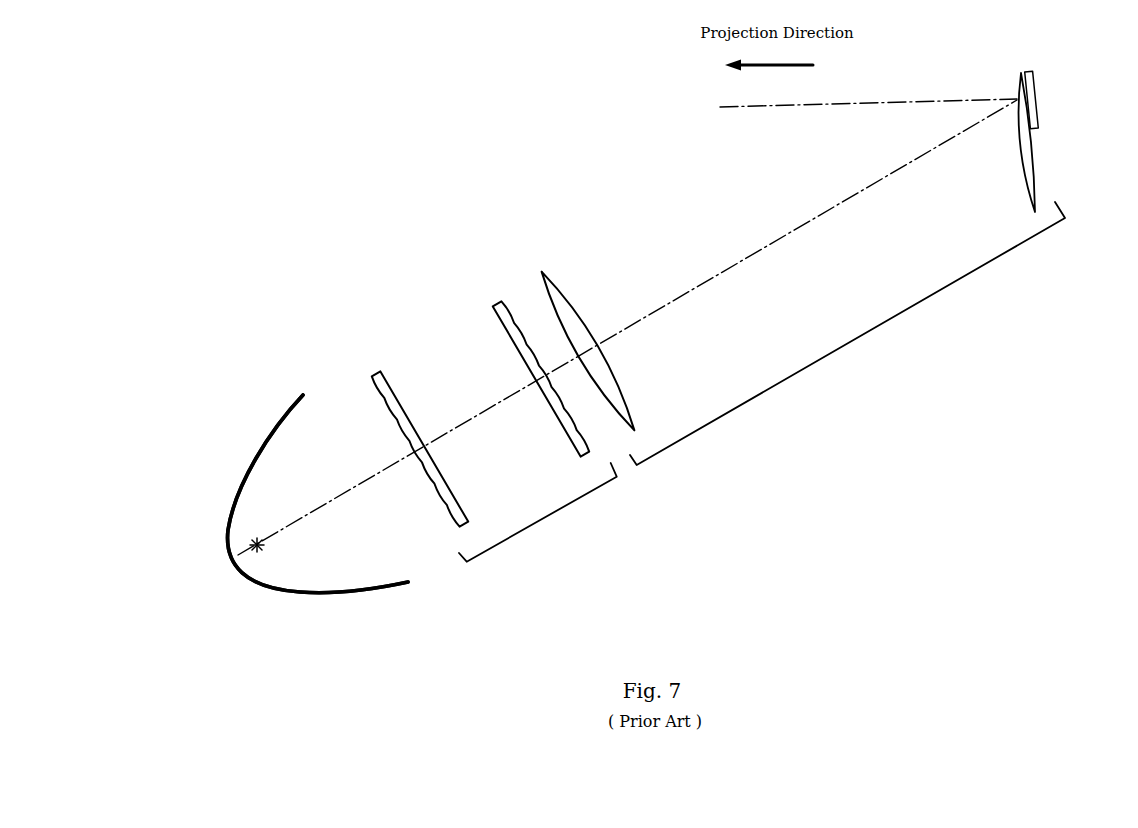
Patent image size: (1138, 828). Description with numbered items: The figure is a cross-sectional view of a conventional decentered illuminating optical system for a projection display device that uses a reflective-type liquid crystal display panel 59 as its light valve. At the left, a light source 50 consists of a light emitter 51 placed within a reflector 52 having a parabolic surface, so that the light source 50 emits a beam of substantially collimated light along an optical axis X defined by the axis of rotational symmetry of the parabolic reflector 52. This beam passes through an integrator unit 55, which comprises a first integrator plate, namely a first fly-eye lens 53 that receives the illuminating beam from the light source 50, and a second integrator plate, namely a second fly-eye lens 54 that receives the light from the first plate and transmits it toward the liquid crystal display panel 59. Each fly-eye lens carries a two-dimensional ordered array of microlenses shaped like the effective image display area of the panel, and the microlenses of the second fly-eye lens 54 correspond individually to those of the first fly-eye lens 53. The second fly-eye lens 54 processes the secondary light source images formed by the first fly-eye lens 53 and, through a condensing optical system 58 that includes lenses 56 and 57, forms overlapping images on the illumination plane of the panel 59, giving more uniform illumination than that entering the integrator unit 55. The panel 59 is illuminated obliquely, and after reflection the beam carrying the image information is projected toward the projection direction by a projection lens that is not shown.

The light source 50 is at (247, 424).
The light emitter 51 is at (251, 538).
The reflector 52 is at (237, 494).
The first fly-eye lens 53 is at (375, 372).
The second fly-eye lens 54 is at (497, 303).
The integrator unit 55 is at (542, 518).
The lens 56 is at (554, 282).
The lens 57 is at (1023, 170).
The condensing optical system 58 is at (866, 332).
The reflective-type liquid crystal display panel 59 is at (1035, 82).
The optical axis X is at (791, 236).